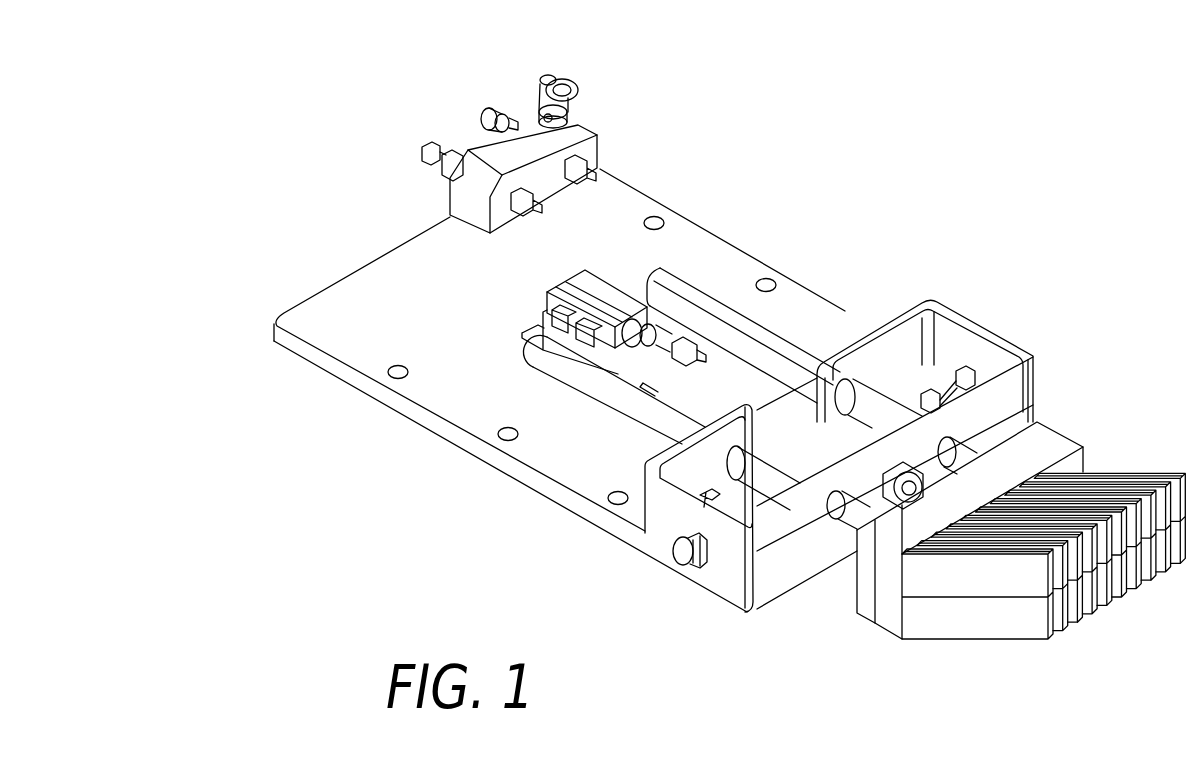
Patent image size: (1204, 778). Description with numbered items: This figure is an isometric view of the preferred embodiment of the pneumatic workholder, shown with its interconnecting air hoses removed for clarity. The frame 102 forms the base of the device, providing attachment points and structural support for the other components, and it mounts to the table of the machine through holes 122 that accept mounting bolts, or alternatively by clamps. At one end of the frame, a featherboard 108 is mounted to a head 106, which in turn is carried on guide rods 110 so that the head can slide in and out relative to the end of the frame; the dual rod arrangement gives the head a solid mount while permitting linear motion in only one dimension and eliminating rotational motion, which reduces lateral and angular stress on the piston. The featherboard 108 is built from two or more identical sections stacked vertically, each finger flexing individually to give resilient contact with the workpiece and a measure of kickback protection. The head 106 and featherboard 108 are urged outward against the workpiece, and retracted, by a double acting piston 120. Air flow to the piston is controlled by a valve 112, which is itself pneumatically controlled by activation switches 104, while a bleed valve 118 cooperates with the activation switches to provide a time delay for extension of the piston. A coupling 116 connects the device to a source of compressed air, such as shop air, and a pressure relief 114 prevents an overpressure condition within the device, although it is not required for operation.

The frame 102 is at (557, 390).
The activation switches 104 is at (819, 461).
The head 106 is at (891, 549).
The featherboard 108 is at (991, 599).
The guide rods 110 is at (577, 320).
The valve 112 is at (641, 239).
The pressure relief 114 is at (493, 132).
The coupling 116 is at (426, 104).
The bleed valve 118 is at (374, 149).
The double acting piston 120 is at (839, 442).
The holes 122 is at (577, 355).